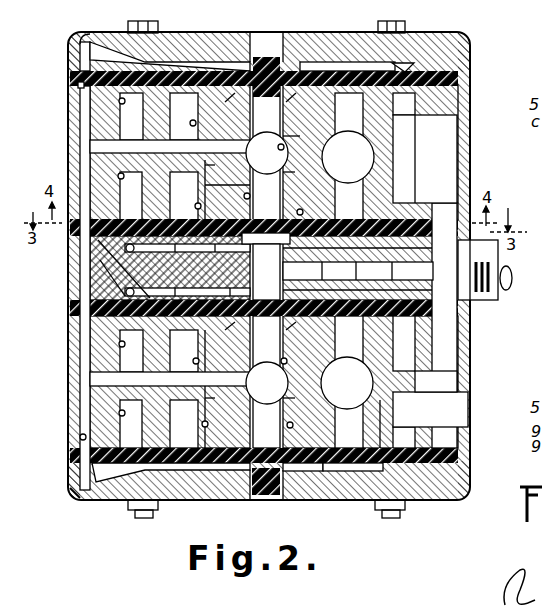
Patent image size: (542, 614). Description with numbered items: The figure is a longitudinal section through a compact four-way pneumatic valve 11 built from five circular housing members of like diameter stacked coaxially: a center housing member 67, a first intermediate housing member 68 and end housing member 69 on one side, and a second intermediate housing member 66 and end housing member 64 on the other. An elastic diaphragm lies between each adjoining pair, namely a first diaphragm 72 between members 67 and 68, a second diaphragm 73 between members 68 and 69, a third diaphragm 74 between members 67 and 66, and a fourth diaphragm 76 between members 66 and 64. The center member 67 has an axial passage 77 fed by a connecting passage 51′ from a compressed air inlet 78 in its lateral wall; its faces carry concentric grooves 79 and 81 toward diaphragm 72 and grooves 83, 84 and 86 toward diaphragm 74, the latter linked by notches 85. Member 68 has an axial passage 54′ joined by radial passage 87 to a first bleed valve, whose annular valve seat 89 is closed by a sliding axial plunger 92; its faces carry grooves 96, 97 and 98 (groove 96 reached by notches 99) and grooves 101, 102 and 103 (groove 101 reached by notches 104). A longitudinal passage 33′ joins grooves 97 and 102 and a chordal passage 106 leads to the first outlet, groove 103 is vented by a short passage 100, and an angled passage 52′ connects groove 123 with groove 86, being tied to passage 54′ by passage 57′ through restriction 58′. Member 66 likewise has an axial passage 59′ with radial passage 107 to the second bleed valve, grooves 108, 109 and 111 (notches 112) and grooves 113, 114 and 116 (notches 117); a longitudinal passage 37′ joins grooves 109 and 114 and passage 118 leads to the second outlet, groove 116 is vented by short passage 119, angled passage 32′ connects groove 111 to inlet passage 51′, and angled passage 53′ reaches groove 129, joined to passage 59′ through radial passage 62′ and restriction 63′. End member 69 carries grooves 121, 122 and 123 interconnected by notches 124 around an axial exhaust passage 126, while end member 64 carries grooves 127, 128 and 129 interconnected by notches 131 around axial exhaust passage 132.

The end housing member 69 is at (104, 34).
The bolt 11 is at (141, 21).
The notches 124 is at (200, 62).
The axial exhaust passage 126 is at (258, 57).
The annular groove 121 is at (320, 62).
The annular groove 122 is at (380, 32).
The annular groove 123 is at (406, 67).
The second diaphragm 73 is at (466, 79).
The short passage 100 is at (458, 120).
The compressed air inlet 78 is at (472, 300).
The angled passage 32′ is at (447, 356).
The short passage 119 is at (460, 396).
The angled passage 52′ is at (78, 85).
The annular groove 103 is at (119, 101).
The first intermediate housing member 68 is at (70, 125).
The passage 57′ is at (95, 149).
The annular groove 98 is at (118, 176).
The first diaphragm 72 is at (68, 226).
The center housing member 67 is at (70, 291).
The third diaphragm 74 is at (76, 305).
The second intermediate housing member 66 is at (70, 334).
The annular groove 111 is at (119, 344).
The radial passage 62′ is at (95, 381).
The annular groove 116 is at (119, 414).
The angled passage 53′ is at (80, 437).
The fourth diaphragm 76 is at (76, 457).
The end housing member 64 is at (70, 491).
The notches 131 is at (184, 500).
The axial exhaust passage 132 is at (258, 495).
The annular groove 127 is at (287, 500).
The annular groove 128 is at (334, 500).
The annular groove 129 is at (412, 478).
The annular groove 101 is at (226, 102).
The annular groove 102 is at (196, 124).
The notches 104 is at (290, 102).
The radial passage 87 is at (288, 136).
The chordal passage 106 is at (284, 147).
The restriction 58′ is at (212, 165).
The notches 99 is at (246, 194).
The annular groove 97 is at (202, 206).
The axial passage 54′ is at (288, 172).
The annular groove 96 is at (303, 210).
The longitudinal passage 33′ is at (361, 180).
The annular valve seat 89 is at (175, 252).
The annular groove 79 is at (205, 255).
The axial passage 77 is at (253, 257).
The annular groove 86 is at (121, 278).
The notches 85 is at (163, 285).
The annular groove 83 is at (230, 292).
The connecting passage 51′ is at (358, 272).
The annular groove 81 is at (336, 272).
The annular groove 84 is at (369, 272).
The sliding axial plunger 92 is at (404, 272).
The annular groove 108 is at (226, 332).
The annular groove 109 is at (199, 361).
The restriction 63′ is at (210, 398).
The annular groove 114 is at (208, 424).
The notches 112 is at (290, 332).
The axial passage 59′ is at (287, 361).
The notches 117 is at (290, 398).
The annular groove 113 is at (293, 425).
The radial passage 107 is at (281, 392).
The passage 118 is at (357, 391).
The longitudinal passage 37′ is at (380, 415).